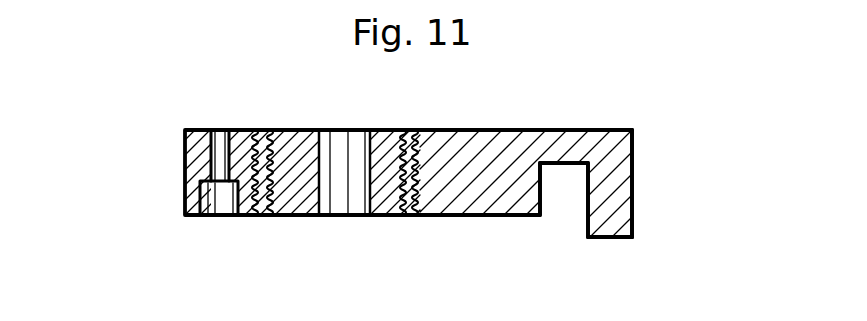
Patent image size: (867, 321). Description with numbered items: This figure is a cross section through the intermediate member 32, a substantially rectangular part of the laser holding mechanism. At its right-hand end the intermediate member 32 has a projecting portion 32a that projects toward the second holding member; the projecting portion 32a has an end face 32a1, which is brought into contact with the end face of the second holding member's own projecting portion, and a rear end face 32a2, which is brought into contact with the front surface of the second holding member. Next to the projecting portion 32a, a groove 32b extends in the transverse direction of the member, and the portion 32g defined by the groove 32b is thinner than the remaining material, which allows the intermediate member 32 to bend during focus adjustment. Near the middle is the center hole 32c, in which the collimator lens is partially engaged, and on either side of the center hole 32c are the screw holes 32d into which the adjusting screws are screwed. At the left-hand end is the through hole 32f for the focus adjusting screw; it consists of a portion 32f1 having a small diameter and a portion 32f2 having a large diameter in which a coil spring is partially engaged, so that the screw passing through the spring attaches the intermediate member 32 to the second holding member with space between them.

The intermediate member 32 is at (545, 115).
The projecting portion 32a is at (628, 199).
The end face of the projecting portion 32a1 is at (632, 163).
The rear end face of the projecting portion 32a2 is at (610, 238).
The groove 32b is at (540, 184).
The center hole 32c is at (370, 204).
The screw holes 32d is at (405, 130).
The through hole 32f is at (97, 170).
The small diameter portion 32f1 is at (206, 166).
The large diameter portion 32f2 is at (233, 203).
The thin portion 32g is at (578, 145).